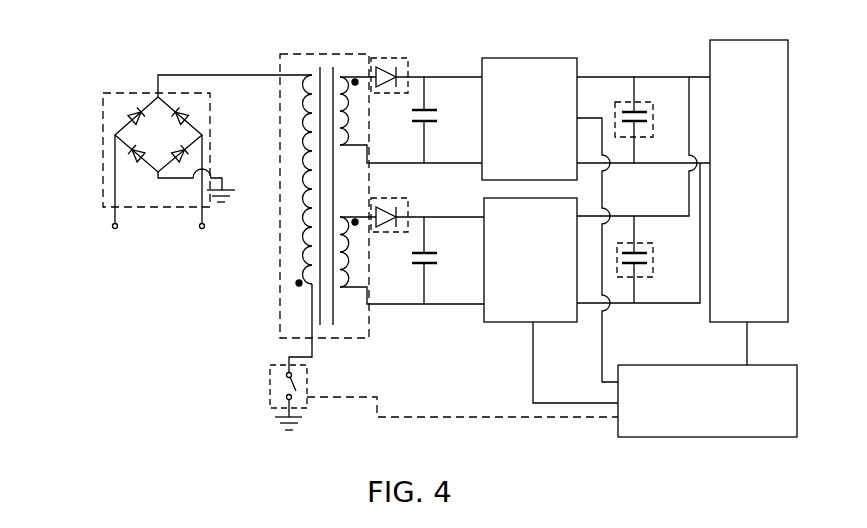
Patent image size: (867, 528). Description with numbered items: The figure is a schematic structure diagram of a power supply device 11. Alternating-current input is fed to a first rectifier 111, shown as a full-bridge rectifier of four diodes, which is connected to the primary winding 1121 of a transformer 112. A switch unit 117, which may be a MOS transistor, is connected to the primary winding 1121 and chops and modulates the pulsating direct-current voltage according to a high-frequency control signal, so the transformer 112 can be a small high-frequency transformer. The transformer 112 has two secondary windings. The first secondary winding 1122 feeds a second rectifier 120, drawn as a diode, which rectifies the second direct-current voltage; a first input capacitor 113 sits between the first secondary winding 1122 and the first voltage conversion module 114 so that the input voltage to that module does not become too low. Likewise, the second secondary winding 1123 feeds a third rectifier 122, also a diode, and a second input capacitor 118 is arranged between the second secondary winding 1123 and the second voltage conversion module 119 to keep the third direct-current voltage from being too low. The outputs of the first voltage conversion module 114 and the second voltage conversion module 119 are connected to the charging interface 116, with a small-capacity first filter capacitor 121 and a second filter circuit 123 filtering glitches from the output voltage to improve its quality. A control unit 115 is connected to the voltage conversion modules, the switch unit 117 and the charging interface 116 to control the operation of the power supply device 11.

The power supply device 11 is at (60, 40).
The first rectifier 111 is at (112, 94).
The transformer 112 is at (320, 202).
The primary winding 1121 is at (307, 143).
The first secondary winding 1122 is at (360, 117).
The second secondary winding 1123 is at (363, 255).
The first input capacitor 113 is at (431, 111).
The first voltage conversion module 114 is at (529, 119).
The control unit 115 is at (707, 401).
The charging interface 116 is at (749, 181).
The switch unit 117 is at (277, 367).
The second input capacitor 118 is at (431, 253).
The second voltage conversion module 119 is at (530, 260).
The second rectifier 120 is at (401, 59).
The first filter capacitor 121 is at (641, 103).
The third rectifier 122 is at (400, 200).
The second filter circuit 123 is at (641, 244).